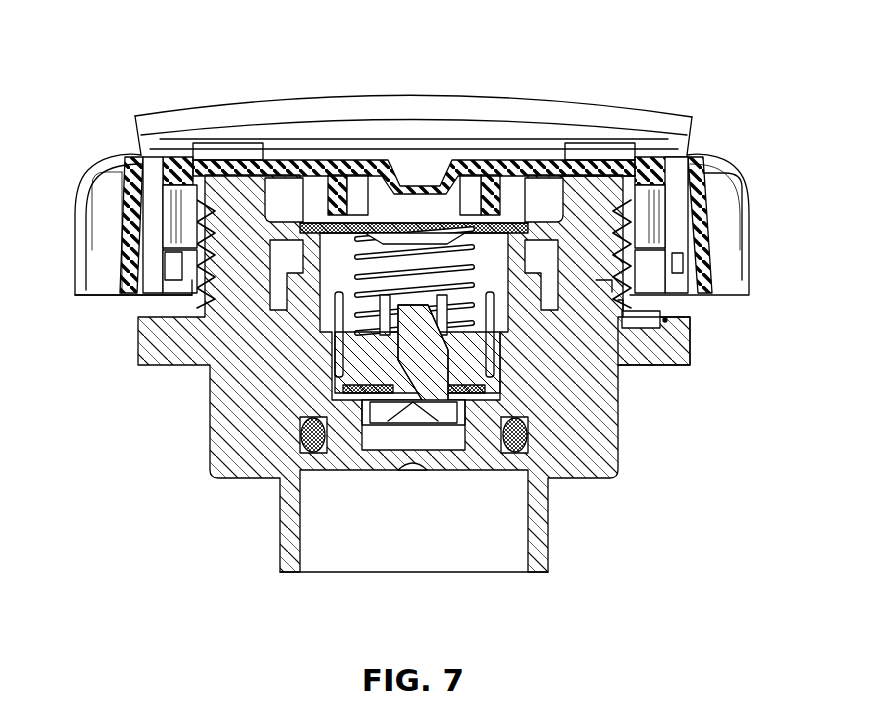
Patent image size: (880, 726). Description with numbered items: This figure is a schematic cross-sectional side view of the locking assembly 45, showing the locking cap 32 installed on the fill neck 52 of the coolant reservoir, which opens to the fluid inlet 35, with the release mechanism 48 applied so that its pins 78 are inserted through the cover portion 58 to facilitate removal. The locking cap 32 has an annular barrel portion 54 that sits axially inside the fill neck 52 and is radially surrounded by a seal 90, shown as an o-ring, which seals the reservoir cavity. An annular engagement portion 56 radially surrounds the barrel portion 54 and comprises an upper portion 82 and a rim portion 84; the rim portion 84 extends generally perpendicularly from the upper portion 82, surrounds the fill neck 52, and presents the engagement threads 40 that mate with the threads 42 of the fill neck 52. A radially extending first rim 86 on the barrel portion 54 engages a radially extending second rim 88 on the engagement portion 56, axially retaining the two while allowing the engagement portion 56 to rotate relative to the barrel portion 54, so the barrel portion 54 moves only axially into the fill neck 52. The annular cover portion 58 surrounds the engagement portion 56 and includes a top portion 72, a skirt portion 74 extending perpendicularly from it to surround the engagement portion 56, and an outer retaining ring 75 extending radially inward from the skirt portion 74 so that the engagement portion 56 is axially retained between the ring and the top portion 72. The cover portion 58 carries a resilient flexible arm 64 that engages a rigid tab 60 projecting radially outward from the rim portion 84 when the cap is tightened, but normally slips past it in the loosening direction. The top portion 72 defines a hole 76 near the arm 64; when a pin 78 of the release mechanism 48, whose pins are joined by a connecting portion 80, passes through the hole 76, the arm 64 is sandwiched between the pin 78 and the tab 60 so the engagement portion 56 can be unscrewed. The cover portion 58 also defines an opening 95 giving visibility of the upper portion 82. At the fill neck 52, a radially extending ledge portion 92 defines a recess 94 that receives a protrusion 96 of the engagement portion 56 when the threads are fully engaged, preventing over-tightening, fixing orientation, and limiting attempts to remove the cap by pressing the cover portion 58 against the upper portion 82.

The locking cap 32 is at (107, 165).
The fluid inlet 35 is at (268, 236).
The engagement threads 40 is at (550, 320).
The threads 42 is at (600, 283).
The locking assembly 45 is at (76, 98).
The release mechanism 48 is at (268, 108).
The fill neck 52 is at (240, 438).
The barrel portion 54 is at (485, 437).
The engagement portion 56 is at (552, 195).
The cover portion 58 is at (90, 228).
The tab 60 is at (185, 205).
The flexible arm 64 is at (133, 240).
The top portion 72 is at (320, 140).
The skirt portion 74 is at (120, 270).
The outer retaining ring 75 is at (173, 262).
The hole 76 is at (137, 152).
The pin 78 is at (153, 267).
The connecting portion 80 is at (360, 105).
The upper portion 82 is at (466, 163).
The rim portion 84 is at (660, 207).
The first rim 86 is at (545, 160).
The second rim 88 is at (562, 198).
The seal 90 is at (527, 437).
The ledge portion 92 is at (677, 353).
The recess 94 is at (668, 320).
The opening 95 is at (419, 145).
The protrusion 96 is at (640, 322).